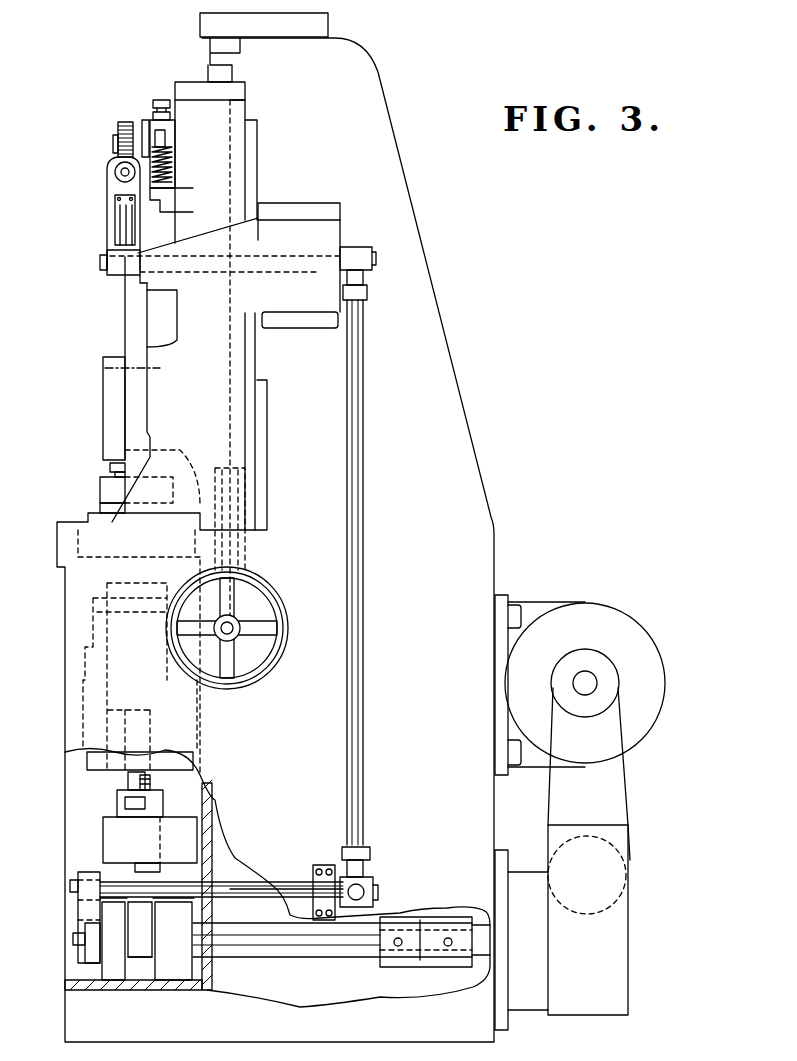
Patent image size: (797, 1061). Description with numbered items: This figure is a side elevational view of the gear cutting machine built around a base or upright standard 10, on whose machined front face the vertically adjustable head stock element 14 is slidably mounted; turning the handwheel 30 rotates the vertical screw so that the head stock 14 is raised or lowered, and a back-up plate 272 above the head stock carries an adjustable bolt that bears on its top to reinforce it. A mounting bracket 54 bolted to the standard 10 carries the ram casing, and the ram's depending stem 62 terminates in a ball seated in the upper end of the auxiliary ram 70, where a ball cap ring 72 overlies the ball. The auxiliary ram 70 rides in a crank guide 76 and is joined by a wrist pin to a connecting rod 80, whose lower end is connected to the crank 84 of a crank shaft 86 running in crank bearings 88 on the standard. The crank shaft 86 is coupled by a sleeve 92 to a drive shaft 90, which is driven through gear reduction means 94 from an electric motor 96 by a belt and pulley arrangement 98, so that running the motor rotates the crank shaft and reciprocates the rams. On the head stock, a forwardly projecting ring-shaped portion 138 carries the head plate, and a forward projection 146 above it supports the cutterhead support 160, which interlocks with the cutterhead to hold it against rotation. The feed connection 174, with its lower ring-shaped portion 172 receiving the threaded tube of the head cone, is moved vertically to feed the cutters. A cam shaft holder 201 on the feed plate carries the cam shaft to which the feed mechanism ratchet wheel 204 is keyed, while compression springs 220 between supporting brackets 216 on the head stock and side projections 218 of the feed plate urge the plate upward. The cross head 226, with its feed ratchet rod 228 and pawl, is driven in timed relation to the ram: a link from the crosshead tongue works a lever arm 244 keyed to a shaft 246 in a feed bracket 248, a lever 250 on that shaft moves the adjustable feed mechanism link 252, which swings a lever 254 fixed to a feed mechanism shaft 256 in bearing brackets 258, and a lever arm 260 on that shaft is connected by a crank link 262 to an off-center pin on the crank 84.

The base or upright standard 10 is at (388, 148).
The head stock element 14 is at (190, 107).
The handwheel 30 is at (278, 605).
The mounting bracket 54 is at (90, 760).
The stem 62 is at (128, 773).
The auxiliary ram member 70 is at (118, 803).
The ball cap ring 72 is at (148, 777).
The crank guide 76 is at (120, 835).
The connecting rod 80 is at (142, 908).
The crank 84 is at (150, 957).
The crank shaft 86 is at (233, 947).
The crank bearings 88 is at (180, 917).
The drive shaft 90 is at (475, 927).
The sleeve 92 is at (393, 923).
The gear reduction means 94 is at (540, 1007).
The electric motor 96 is at (647, 720).
The belt and pulley arrangement 98 is at (627, 782).
The ring-shaped portion 138 is at (88, 513).
The forward projection 146 is at (113, 405).
The cutterhead support 160 is at (107, 458).
The ring-shaped portion of feed connection 172 is at (103, 488).
The feed connection 174 is at (135, 328).
The cam shaft holder 201 is at (140, 125).
The feed mechanism ratchet wheel 204 is at (125, 122).
The supporting brackets 216 is at (168, 200).
The side projections 218 is at (167, 128).
The compression springs 220 is at (167, 163).
The cross head 226 is at (115, 187).
The feed ratchet rod 228 is at (115, 172).
The lever arm 244 is at (112, 253).
The shaft 246 is at (133, 292).
The feed bracket 248 is at (273, 237).
The lever 250 is at (358, 250).
The feed mechanism link 252 is at (360, 535).
The lever 254 is at (375, 872).
The feed mechanism shaft 256 is at (263, 887).
The bearing brackets 258 is at (325, 877).
The lever arm 260 is at (85, 912).
The crank link 262 is at (87, 957).
The back-up plate 272 is at (328, 26).